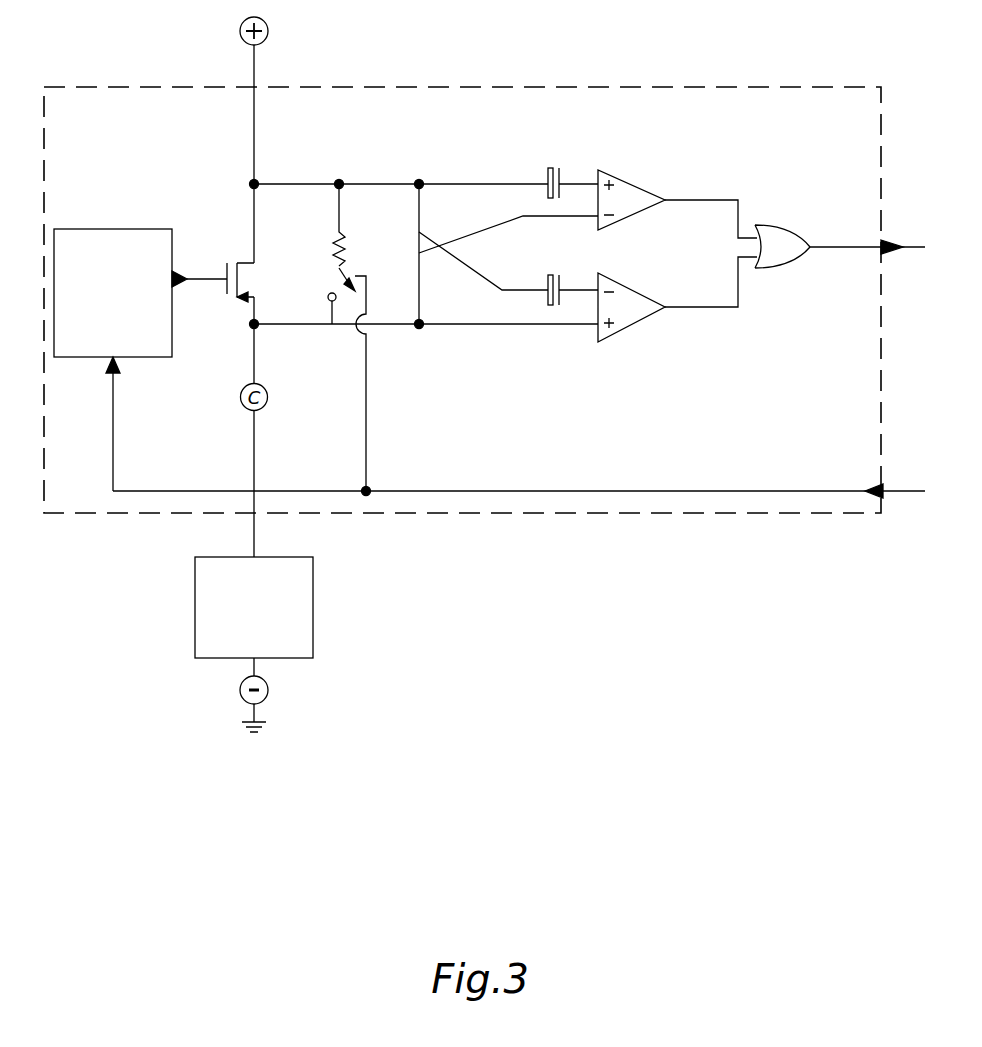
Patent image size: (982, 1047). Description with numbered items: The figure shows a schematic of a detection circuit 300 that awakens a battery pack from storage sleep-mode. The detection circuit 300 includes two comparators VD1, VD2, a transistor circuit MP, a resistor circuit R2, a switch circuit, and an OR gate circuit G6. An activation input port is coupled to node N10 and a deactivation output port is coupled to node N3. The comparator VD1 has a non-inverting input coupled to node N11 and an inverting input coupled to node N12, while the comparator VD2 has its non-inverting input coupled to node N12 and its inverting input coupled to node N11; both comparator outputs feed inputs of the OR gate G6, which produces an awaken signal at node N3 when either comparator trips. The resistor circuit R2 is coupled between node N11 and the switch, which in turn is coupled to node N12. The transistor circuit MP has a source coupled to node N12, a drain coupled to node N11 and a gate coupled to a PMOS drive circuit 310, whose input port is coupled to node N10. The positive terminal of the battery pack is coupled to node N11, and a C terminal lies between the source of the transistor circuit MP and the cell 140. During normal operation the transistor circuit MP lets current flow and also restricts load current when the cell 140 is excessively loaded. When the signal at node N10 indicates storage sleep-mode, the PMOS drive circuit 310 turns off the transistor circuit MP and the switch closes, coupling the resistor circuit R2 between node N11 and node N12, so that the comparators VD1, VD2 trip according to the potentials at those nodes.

The detection circuit 300 is at (476, 70).
The PMOS drive circuit 310 is at (91, 229).
The cell 140 is at (313, 578).
The transistor circuit MP is at (248, 288).
The resistor circuit R2 is at (357, 337).
The comparator VD1 is at (677, 201).
The comparator VD2 is at (677, 299).
The OR gate circuit G6 is at (782, 246).
The node N11 is at (424, 173).
The node N12 is at (424, 337).
The node N10 is at (516, 427).
The node N3 is at (864, 251).